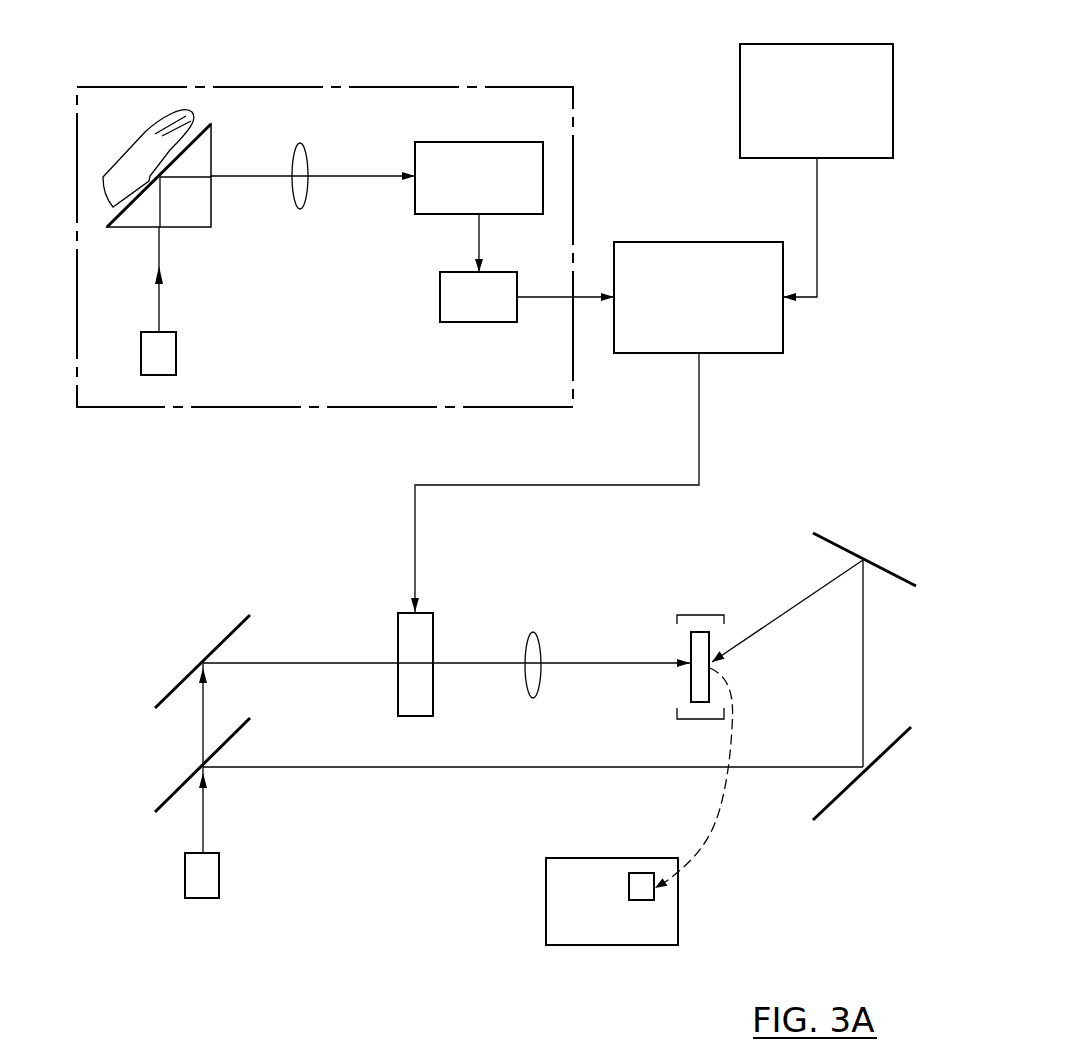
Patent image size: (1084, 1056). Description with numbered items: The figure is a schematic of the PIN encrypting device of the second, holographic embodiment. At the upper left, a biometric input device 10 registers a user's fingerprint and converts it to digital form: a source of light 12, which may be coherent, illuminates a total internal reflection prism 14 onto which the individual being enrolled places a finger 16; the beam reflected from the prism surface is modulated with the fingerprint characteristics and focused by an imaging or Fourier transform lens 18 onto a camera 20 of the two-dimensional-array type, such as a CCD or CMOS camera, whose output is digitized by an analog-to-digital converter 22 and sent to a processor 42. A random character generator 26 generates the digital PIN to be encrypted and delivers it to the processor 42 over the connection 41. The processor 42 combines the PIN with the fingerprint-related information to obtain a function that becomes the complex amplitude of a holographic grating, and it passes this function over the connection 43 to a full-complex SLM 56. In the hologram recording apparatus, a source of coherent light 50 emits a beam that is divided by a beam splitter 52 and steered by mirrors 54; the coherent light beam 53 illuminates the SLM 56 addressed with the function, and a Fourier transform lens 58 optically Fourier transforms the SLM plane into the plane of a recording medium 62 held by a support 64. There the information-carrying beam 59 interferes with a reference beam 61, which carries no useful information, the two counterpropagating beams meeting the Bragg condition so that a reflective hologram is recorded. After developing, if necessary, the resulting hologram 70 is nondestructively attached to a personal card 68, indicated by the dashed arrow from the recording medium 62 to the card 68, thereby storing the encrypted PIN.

The biometric input device 10 is at (306, 86).
The source of light 12 is at (176, 362).
The total internal reflection prism 14 is at (202, 223).
The finger 16 is at (128, 160).
The imaging or Fourier transform lens 18 is at (306, 204).
The camera 20 is at (494, 148).
The analog-to-digital converter 22 is at (472, 322).
The random character generator 26 is at (748, 88).
The connection line 41 is at (818, 287).
The processor 42 is at (677, 252).
The connection line 43 is at (699, 440).
The source of coherent light 50 is at (215, 884).
The beam splitter 52 is at (178, 792).
The coherent light beam 53 is at (205, 700).
The mirrors 54 is at (192, 668).
The full-complex SLM 56 is at (405, 698).
The Fourier transform lens 58 is at (535, 698).
The beam 59 is at (611, 662).
The reference beam 61 is at (779, 617).
The recording medium 62 is at (697, 688).
The support 64 is at (692, 720).
The personal card 68 is at (600, 858).
The hologram 70 is at (641, 902).